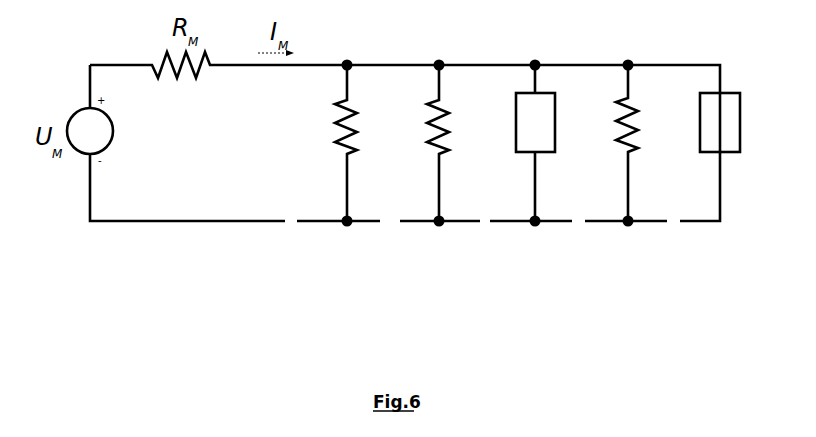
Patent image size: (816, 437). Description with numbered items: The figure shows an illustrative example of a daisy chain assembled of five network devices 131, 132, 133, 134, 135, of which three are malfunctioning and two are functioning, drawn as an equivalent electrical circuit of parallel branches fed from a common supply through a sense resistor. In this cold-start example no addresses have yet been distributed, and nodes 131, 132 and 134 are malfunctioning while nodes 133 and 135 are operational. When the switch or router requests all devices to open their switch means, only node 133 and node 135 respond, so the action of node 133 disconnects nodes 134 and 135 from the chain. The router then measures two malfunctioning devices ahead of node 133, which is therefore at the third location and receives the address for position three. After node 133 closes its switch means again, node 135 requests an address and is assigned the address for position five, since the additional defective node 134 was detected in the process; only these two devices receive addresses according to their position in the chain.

The network device 131 is at (335, 152).
The network device 132 is at (430, 152).
The network device 133 is at (522, 155).
The network device 134 is at (620, 152).
The network device 135 is at (712, 155).